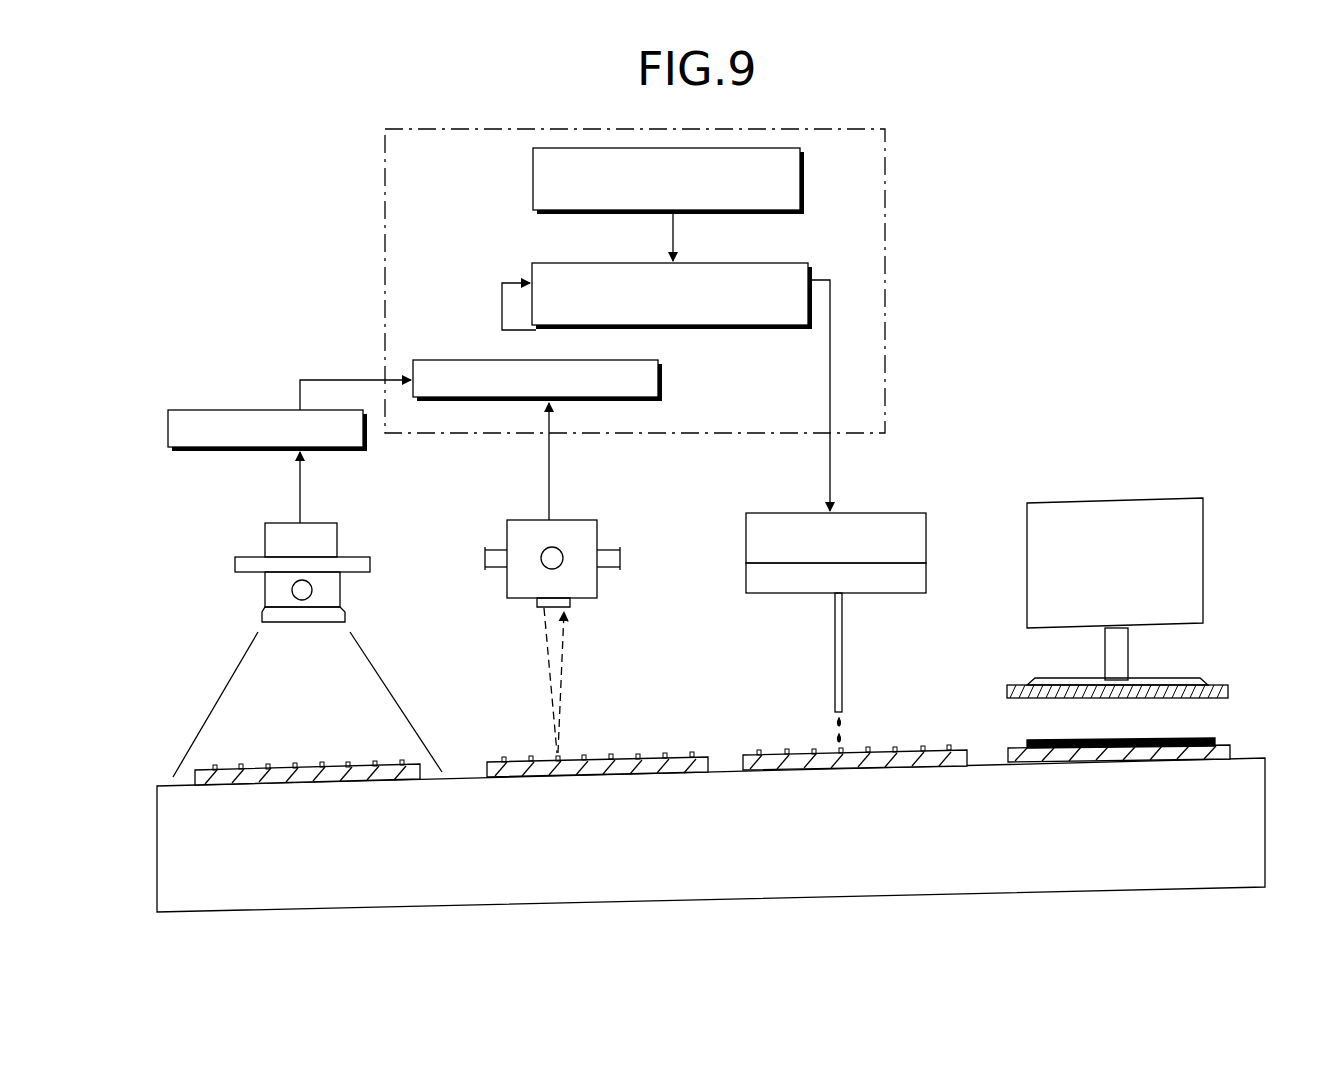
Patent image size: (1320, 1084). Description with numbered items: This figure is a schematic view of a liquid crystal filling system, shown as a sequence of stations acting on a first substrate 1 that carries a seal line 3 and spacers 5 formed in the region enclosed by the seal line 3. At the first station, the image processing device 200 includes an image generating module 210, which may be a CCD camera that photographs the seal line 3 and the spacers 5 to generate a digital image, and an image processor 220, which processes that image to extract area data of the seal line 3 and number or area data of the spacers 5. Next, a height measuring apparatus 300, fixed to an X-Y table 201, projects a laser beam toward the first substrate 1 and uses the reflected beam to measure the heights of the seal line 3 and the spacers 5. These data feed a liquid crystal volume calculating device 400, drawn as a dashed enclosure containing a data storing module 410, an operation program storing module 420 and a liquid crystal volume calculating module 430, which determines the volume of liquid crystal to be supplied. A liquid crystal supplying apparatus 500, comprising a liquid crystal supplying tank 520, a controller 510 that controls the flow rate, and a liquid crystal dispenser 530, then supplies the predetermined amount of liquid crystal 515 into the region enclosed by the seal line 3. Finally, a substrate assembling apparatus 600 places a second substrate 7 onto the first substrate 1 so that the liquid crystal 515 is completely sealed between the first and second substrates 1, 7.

The first substrate 1 is at (237, 783).
The seal line 3 is at (213, 766).
The spacer 5 is at (240, 766).
The second substrate 7 is at (1007, 692).
The image processing device 200 is at (160, 505).
The X-Y table 201 is at (248, 572).
The image generating module 210 is at (275, 540).
The image processor 220 is at (210, 452).
The height measuring apparatus 300 is at (597, 522).
The liquid crystal volume calculating device 400 is at (885, 270).
The data storing module 410 is at (662, 378).
The operation program storing module 420 is at (800, 170).
The liquid crystal volume calculating module 430 is at (532, 277).
The liquid crystal supplying apparatus 500 is at (825, 617).
The controller 510 is at (746, 580).
The liquid crystal 515 is at (846, 726).
The liquid crystal supplying tank 520 is at (746, 543).
The liquid crystal dispenser 530 is at (843, 652).
The substrate assembling apparatus 600 is at (1135, 472).